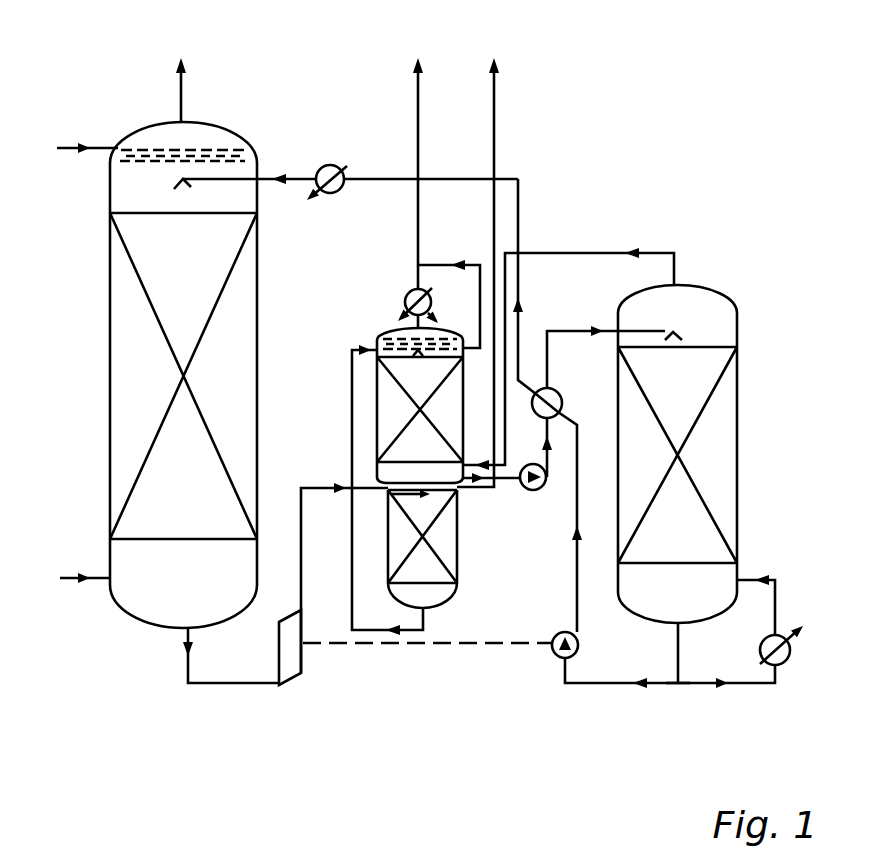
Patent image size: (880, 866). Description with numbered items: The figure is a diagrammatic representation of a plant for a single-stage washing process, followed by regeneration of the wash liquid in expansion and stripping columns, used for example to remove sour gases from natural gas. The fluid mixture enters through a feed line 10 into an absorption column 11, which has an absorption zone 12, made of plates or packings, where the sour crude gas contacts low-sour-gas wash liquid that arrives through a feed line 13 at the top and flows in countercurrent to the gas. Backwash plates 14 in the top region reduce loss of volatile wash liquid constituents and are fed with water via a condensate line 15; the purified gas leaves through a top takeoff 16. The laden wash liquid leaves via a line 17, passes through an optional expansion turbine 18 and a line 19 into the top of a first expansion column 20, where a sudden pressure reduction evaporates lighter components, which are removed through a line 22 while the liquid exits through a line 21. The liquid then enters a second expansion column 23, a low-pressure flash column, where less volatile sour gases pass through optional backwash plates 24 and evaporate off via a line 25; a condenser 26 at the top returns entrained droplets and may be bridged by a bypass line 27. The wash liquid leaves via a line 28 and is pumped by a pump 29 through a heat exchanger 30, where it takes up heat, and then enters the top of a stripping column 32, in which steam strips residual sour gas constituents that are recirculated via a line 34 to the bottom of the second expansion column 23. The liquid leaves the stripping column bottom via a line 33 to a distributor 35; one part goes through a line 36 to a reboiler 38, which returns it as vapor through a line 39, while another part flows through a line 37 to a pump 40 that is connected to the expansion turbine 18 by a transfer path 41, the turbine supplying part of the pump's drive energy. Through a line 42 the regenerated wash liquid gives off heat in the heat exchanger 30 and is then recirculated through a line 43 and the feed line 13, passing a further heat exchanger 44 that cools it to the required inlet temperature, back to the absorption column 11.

The feed line 10 is at (73, 577).
The absorption column 11 is at (95, 362).
The absorption zone 12 is at (150, 405).
The feed line 13 is at (303, 178).
The backwash plates 14 is at (190, 150).
The condensate line 15 is at (100, 145).
The top takeoff 16 is at (182, 82).
The line 17 is at (233, 690).
The expansion turbine 18 is at (290, 653).
The line 19 is at (325, 482).
The first expansion column 20 is at (427, 568).
The line 21 is at (348, 430).
The line 22 is at (495, 92).
The second expansion column 23 is at (398, 408).
The backwash plates 24 is at (402, 330).
The line 25 is at (418, 92).
The condenser 26 is at (408, 290).
The bypass line 27 is at (476, 263).
The line 28 is at (507, 483).
The pump 29 is at (545, 490).
The heat exchanger 30 is at (557, 397).
The stripping column 32 is at (700, 450).
The line 33 is at (675, 648).
The line 34 is at (580, 252).
The distributor 35 is at (677, 687).
The line 36 is at (752, 687).
The line 37 is at (592, 687).
The reboiler 38 is at (782, 664).
The line 39 is at (778, 592).
The pump 40 is at (550, 648).
The transfer path 41 is at (450, 647).
The line 42 is at (578, 500).
The line 43 is at (519, 200).
The heat exchanger 44 is at (338, 193).